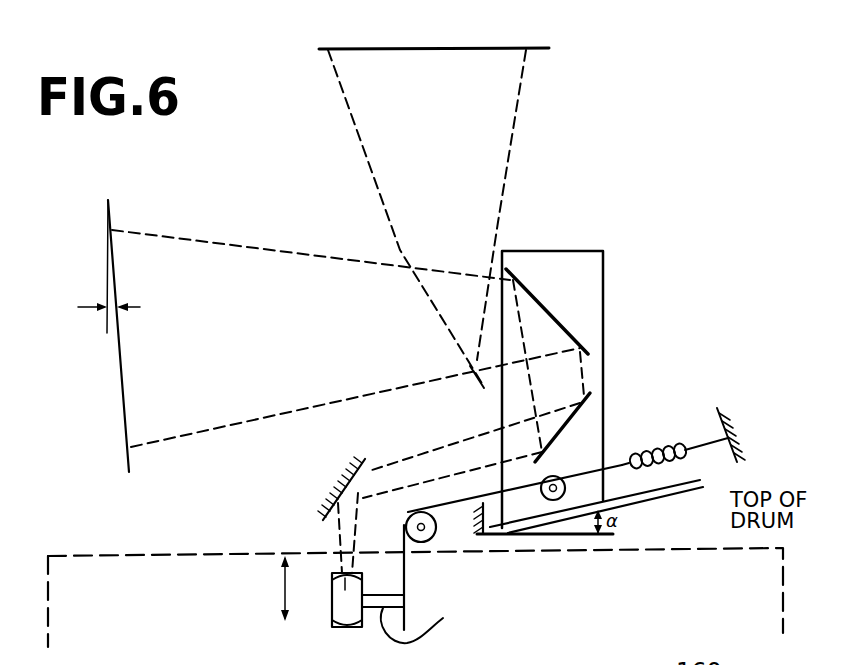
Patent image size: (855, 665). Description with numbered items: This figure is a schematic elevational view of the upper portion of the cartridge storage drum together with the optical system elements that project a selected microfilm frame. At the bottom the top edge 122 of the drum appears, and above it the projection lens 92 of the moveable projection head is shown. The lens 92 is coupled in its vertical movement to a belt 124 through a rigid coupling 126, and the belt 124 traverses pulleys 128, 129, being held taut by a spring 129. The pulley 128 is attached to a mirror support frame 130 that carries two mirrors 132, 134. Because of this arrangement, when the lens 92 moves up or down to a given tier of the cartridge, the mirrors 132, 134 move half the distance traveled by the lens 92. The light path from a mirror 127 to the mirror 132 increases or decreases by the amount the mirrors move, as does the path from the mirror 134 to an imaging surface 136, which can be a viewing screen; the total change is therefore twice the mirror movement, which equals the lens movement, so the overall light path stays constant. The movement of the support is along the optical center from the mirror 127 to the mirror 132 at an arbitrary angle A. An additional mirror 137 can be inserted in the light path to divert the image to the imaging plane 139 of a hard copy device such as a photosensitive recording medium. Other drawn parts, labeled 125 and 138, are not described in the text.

The projection lens 92 is at (330, 603).
The top edge 122 is at (657, 548).
The belt 124 is at (404, 576).
The pulley 125 is at (409, 521).
The rigid coupling 126 is at (428, 619).
The mirror 127 is at (352, 480).
The pulley 128 is at (556, 477).
The spring 129 is at (660, 447).
The mirror support frame 130 is at (604, 295).
The mirror 132 is at (606, 400).
The mirror 134 is at (540, 300).
The imaging surface 136 is at (120, 391).
The additional mirror 137 is at (437, 312).
The drum 138 is at (153, 664).
The imaging plane 139 is at (348, 46).